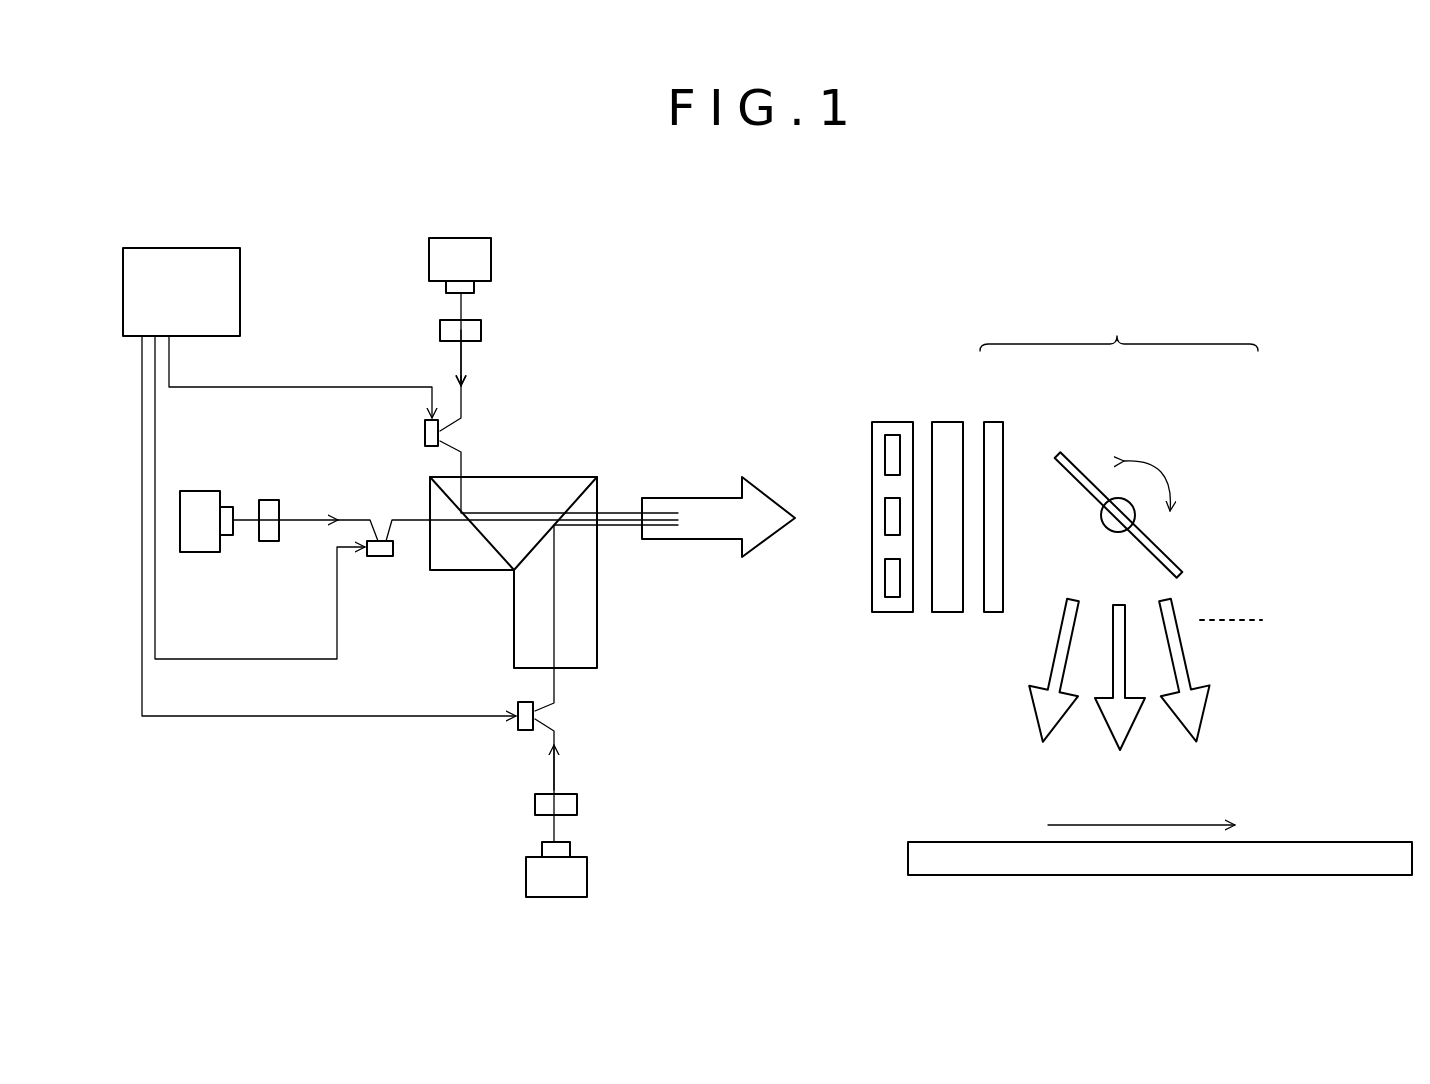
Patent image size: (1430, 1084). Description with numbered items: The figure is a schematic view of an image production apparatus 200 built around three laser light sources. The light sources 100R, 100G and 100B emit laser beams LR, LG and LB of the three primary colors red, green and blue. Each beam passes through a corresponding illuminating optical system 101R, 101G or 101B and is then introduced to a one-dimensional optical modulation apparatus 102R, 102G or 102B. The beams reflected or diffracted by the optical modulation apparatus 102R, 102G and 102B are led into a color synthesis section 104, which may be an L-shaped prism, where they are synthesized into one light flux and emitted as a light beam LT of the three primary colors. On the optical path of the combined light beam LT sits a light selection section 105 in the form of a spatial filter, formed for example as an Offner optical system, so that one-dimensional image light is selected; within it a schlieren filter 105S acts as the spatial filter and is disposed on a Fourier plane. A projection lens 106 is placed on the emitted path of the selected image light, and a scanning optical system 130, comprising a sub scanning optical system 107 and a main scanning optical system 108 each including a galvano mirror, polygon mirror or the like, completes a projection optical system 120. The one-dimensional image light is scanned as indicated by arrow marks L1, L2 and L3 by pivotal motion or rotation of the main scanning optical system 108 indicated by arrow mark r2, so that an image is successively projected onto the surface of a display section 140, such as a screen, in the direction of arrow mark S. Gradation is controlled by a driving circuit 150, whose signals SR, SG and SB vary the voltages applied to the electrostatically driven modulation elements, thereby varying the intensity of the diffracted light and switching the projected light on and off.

The driving circuit 150 is at (178, 248).
The light source 100R is at (492, 258).
The illuminating optical system 101R is at (482, 331).
The optical modulation apparatus 102R is at (424, 430).
The light source 100G is at (200, 554).
The illuminating optical system 101G is at (270, 543).
The optical modulation apparatus 102G is at (382, 558).
The light source 100B is at (588, 878).
The illuminating optical system 101B is at (578, 805).
The optical modulation apparatus 102B is at (518, 704).
The color synthesis section 104 is at (563, 475).
The light selection section 105 is at (889, 420).
The schlieren filter 105S is at (885, 583).
The projection lens 106 is at (949, 420).
The sub scanning optical system 107 is at (995, 420).
The main scanning optical system 108 is at (1176, 452).
The projection optical system 120 is at (942, 268).
The scanning optical system 130 is at (1138, 328).
The display section 140 is at (1205, 877).
The image production apparatus 200 is at (1193, 208).
The laser beam LR is at (464, 364).
The laser beam LG is at (307, 519).
The laser beam LB is at (558, 738).
The light beam LT is at (692, 541).
The signal SR is at (300, 377).
The signal SG is at (260, 497).
The signal SB is at (312, 526).
The arrow mark r2 is at (1176, 474).
The arrow mark L1 is at (1053, 653).
The arrow mark L2 is at (1146, 670).
The arrow mark L3 is at (1186, 658).
The arrow mark S is at (1143, 822).